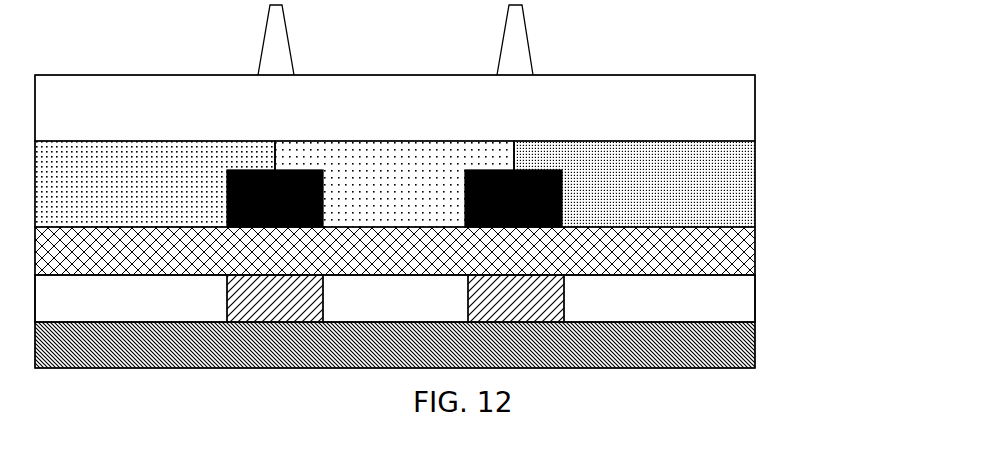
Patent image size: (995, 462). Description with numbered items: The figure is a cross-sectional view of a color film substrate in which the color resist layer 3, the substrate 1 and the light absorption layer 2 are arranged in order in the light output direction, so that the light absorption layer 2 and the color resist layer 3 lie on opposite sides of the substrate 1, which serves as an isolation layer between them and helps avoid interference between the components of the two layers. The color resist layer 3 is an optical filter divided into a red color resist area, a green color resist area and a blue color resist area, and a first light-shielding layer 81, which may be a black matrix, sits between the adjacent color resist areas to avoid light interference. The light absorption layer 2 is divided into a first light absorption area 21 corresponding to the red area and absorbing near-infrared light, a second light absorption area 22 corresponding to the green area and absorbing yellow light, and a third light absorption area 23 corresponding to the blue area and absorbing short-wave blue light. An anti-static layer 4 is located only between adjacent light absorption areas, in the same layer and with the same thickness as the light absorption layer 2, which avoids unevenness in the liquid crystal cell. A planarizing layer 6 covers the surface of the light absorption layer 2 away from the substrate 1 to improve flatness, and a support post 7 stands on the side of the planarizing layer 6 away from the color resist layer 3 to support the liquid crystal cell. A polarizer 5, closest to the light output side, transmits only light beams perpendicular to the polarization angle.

The substrate 1 is at (755, 258).
The light absorption layer 2 is at (451, 298).
The first light absorption area 21 is at (131, 298).
The second light absorption area 22 is at (395, 298).
The third light absorption area 23 is at (659, 298).
The color resist layer 3 is at (755, 187).
The anti-static layer 4 is at (395, 298).
The polarizer 5 is at (755, 350).
The planarizing layer 6 is at (755, 98).
The support post 7 is at (530, 43).
The first light-shielding layer 81 is at (562, 172).